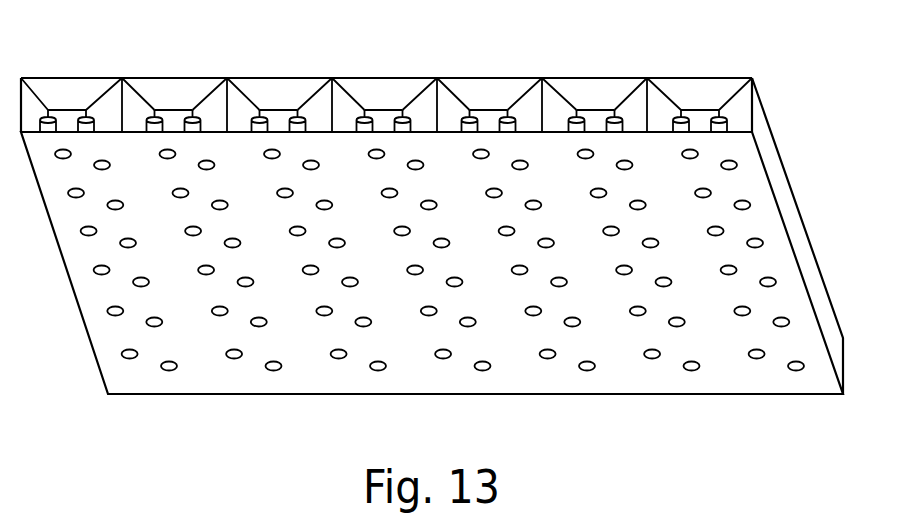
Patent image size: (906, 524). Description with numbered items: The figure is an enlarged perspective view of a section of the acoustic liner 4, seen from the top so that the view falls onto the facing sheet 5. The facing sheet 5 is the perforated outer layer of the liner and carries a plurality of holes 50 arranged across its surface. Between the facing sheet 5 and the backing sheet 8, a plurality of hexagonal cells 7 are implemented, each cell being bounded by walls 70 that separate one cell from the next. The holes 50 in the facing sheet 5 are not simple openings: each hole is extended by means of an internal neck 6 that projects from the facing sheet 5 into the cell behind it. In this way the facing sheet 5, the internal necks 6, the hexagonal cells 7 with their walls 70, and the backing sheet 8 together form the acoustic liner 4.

The acoustic liner 4 is at (444, 240).
The facing sheet 5 is at (715, 369).
The internal neck 6 is at (352, 118).
The hexagonal cell 7 is at (602, 95).
The backing sheet 8 is at (800, 210).
The hole 50 is at (585, 371).
The wall 70 is at (539, 107).